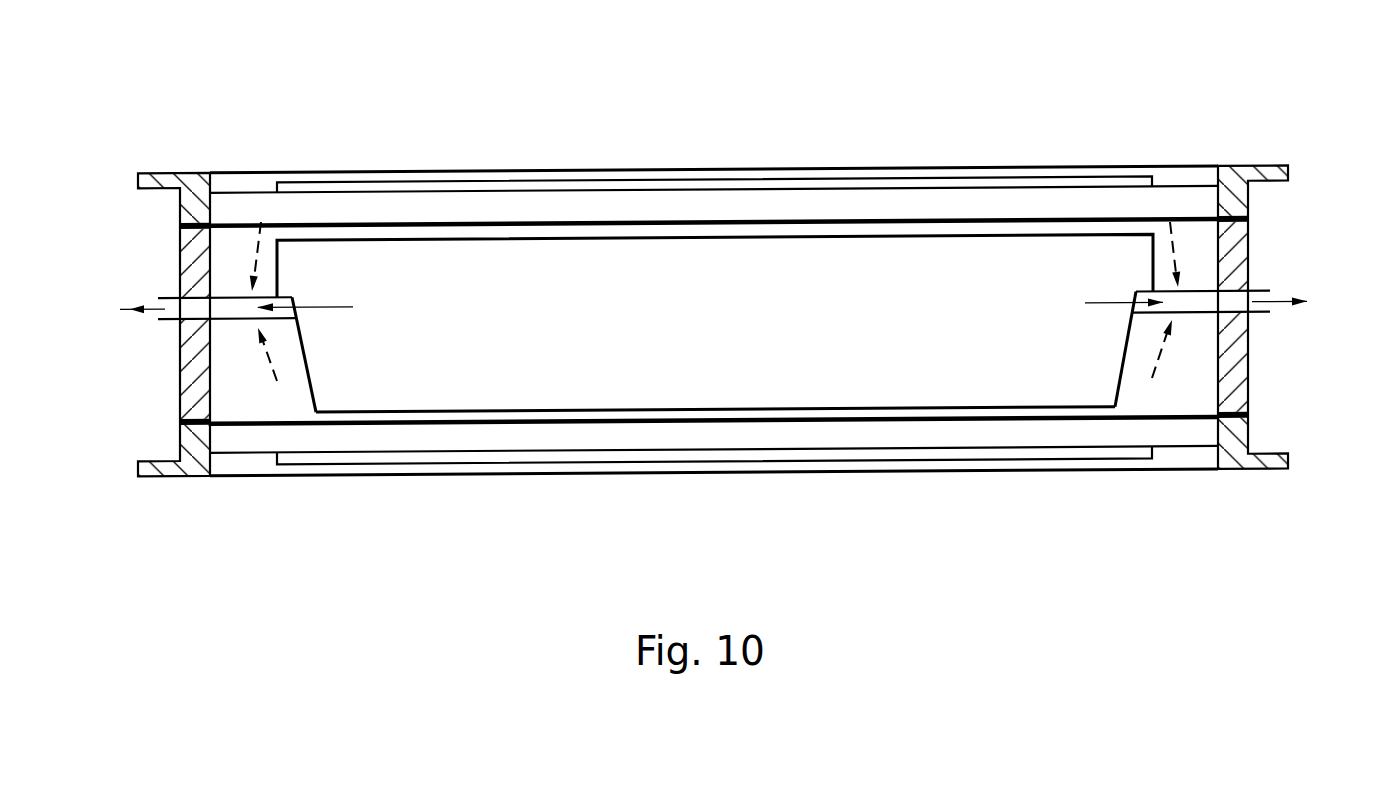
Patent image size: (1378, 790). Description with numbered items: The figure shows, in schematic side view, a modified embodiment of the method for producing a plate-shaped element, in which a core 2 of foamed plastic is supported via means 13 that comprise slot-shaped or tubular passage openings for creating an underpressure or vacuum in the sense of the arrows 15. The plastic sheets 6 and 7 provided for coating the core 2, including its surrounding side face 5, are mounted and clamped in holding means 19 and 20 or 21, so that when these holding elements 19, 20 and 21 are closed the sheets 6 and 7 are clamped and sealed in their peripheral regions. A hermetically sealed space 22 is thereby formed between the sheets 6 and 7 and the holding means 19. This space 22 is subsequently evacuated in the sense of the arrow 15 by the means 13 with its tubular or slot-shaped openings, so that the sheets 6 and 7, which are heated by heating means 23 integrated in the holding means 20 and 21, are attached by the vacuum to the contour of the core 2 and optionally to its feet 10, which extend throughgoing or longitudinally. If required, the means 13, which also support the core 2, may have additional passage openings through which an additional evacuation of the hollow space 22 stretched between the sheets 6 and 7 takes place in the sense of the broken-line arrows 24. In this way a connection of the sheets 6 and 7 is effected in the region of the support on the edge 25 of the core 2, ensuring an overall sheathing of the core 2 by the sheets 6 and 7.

The core 2 is at (513, 303).
The surrounding side face 5 is at (1153, 270).
The plastic sheet 6 is at (261, 192).
The plastic sheet 7 is at (230, 425).
The feet 10 is at (368, 358).
The means 13 is at (220, 319).
The arrows 15 is at (323, 305).
The holding means 19 is at (197, 285).
The holding means 20 is at (1235, 172).
The holding means 21 is at (172, 474).
The hermetically sealed space 22 is at (227, 260).
The heating means 23 is at (668, 187).
The broken-line arrows 24 is at (260, 243).
The edge 25 is at (279, 295).